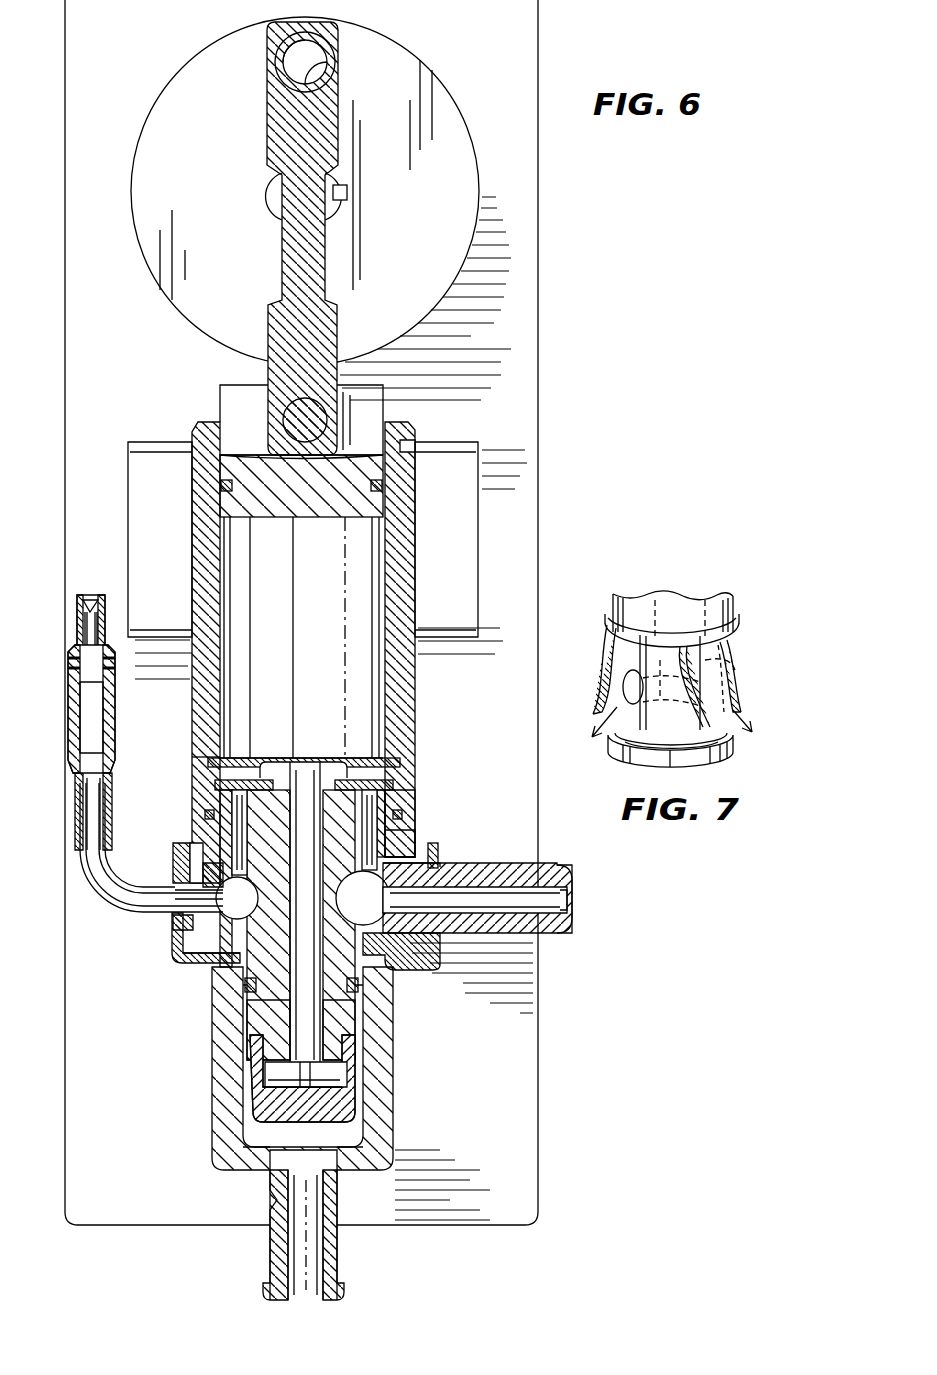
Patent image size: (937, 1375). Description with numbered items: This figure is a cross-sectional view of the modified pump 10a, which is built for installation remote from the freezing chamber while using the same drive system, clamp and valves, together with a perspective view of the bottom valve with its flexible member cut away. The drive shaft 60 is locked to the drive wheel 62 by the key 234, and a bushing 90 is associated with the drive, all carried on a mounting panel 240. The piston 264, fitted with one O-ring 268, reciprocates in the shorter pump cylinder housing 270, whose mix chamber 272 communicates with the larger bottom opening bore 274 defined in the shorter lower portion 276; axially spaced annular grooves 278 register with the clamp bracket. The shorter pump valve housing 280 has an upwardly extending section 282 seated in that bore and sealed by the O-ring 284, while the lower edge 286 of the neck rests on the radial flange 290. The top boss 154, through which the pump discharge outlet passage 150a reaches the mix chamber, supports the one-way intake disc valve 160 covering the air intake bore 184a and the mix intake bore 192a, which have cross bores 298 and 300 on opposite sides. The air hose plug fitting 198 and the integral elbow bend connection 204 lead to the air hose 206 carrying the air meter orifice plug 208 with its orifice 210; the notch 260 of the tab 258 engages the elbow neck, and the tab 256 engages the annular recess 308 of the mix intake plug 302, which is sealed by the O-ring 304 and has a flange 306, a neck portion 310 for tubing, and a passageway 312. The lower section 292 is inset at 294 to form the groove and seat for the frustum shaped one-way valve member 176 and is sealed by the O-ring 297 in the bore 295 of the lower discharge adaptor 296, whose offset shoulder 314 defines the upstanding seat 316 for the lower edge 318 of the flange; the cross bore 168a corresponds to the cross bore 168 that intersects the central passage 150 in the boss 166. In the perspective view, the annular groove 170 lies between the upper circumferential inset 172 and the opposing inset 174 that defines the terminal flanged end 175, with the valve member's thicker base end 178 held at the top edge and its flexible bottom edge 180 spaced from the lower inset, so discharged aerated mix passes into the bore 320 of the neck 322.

In FIG. 6, the modified pump 10a is at (192, 766).
In FIG. 6, the drive shaft 60 is at (272, 205).
In FIG. 6, the drive wheel 62 is at (476, 160).
In FIG. 6, the bushing 90 is at (335, 48).
In FIG. 7, the central passage 150 is at (696, 597).
In FIG. 6, the pump discharge outlet passage 150a is at (250, 977).
In FIG. 6, the top boss 154 is at (333, 770).
In FIG. 6, the one-way intake disc valve 160 is at (242, 773).
In FIG. 6, the boss 166 is at (270, 1098).
In FIG. 7, the boss 166 is at (678, 757).
In FIG. 7, the cross bore 168 is at (624, 686).
In FIG. 6, the cross bore 168a is at (305, 1082).
In FIG. 7, the annular groove 170 is at (650, 728).
In FIG. 7, the upper circumferential inset 172 is at (650, 640).
In FIG. 7, the opposing circumferential inset 174 is at (733, 745).
In FIG. 7, the terminal flanged end 175 is at (692, 755).
In FIG. 6, the frustum shaped one-way valve member 176 is at (353, 1077).
In FIG. 7, the frustum shaped one-way valve member 176 is at (740, 645).
In FIG. 7, the thicker base end 178 is at (736, 628).
In FIG. 6, the bottom flexible edge 180 is at (353, 1100).
In FIG. 7, the bottom flexible edge 180 is at (735, 707).
In FIG. 6, the air intake bore 184a is at (274, 925).
In FIG. 6, the mix intake bore 192a is at (348, 925).
In FIG. 6, the air hose plug fitting 198 is at (172, 930).
In FIG. 6, the elbow bend connection 204 is at (82, 878).
In FIG. 6, the air hose 206 is at (115, 735).
In FIG. 6, the air meter orifice plug 208 is at (77, 617).
In FIG. 6, the orifice 210 is at (92, 603).
In FIG. 6, the key 234 is at (348, 192).
In FIG. 6, the mounting panel 240 is at (540, 50).
In FIG. 6, the upstanding tab 256 is at (440, 945).
In FIG. 6, the upstanding tab 258 is at (173, 850).
In FIG. 6, the rounded notch 260 is at (167, 883).
In FIG. 6, the piston 264 is at (307, 507).
In FIG. 6, the O-ring 268 is at (383, 485).
In FIG. 6, the pump cylinder housing 270 is at (425, 730).
In FIG. 6, the mix chamber 272 is at (380, 668).
In FIG. 6, the bottom opening bore 274 is at (414, 768).
In FIG. 6, the lower portion 276 is at (403, 815).
In FIG. 6, the annular grooves 278 is at (412, 444).
In FIG. 6, the pump valve housing 280 is at (228, 985).
In FIG. 6, the upwardly extending section 282 is at (398, 835).
In FIG. 6, the O-ring 284 is at (416, 803).
In FIG. 6, the lower edge 286 is at (204, 815).
In FIG. 6, the radial flange 290 is at (192, 930).
In FIG. 6, the lower section 292 is at (353, 1037).
In FIG. 6, the inset 294 is at (348, 1020).
In FIG. 6, the bore 295 is at (258, 1140).
In FIG. 6, the lower discharge adaptor 296 is at (395, 1135).
In FIG. 6, the O-ring 297 is at (365, 985).
In FIG. 6, the cross bore 298 is at (240, 862).
In FIG. 6, the cross bore 300 is at (352, 874).
In FIG. 6, the mix intake plug 302 is at (545, 865).
In FIG. 6, the O-ring 304 is at (415, 912).
In FIG. 6, the flange 306 is at (438, 850).
In FIG. 6, the annular recess 308 is at (440, 867).
In FIG. 6, the neck portion 310 is at (574, 876).
In FIG. 6, the passageway 312 is at (558, 898).
In FIG. 6, the offset shoulder 314 is at (354, 977).
In FIG. 6, the upstanding seat 316 is at (242, 916).
In FIG. 6, the lower edge 318 is at (210, 965).
In FIG. 6, the bore 320 is at (310, 1257).
In FIG. 6, the neck 322 is at (338, 1275).